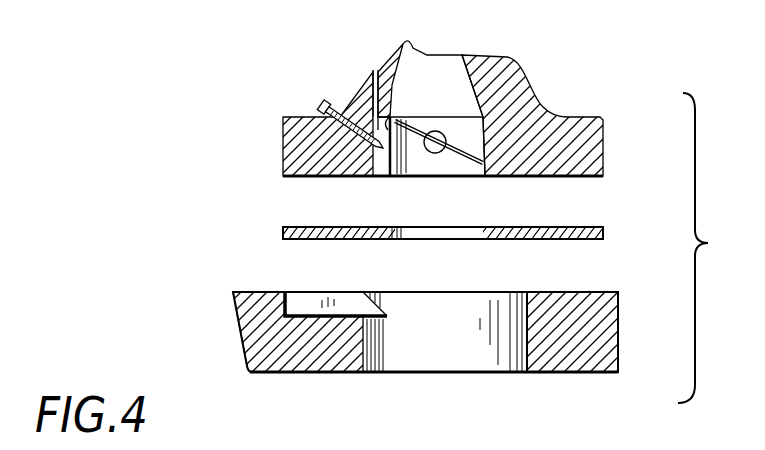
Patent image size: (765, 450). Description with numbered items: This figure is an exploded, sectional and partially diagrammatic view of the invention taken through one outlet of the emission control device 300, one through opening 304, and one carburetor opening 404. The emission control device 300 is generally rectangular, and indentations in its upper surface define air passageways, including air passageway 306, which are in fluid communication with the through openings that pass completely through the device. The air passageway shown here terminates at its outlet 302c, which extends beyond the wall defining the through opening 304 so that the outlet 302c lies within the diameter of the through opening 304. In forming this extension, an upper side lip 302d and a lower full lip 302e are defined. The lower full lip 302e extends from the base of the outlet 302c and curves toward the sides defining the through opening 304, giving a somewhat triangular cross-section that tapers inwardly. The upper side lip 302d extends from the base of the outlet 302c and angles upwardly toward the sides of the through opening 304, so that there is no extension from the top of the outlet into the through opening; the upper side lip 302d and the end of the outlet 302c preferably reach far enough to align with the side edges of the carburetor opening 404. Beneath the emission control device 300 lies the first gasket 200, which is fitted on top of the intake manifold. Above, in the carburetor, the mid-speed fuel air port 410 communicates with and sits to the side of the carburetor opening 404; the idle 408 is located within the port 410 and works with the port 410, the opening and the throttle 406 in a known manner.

The first gasket 200 is at (568, 227).
The emission control device 300 is at (320, 385).
The outlet 302c is at (302, 302).
The upper side lip 302d is at (383, 292).
The lower full lip 302e is at (386, 320).
The through opening 304 is at (490, 307).
The air passageway 306 is at (489, 372).
The carburetor opening 404 is at (430, 168).
The throttle 406 is at (452, 130).
The idle 408 is at (318, 104).
The mid-speed fuel air port 410 is at (378, 116).